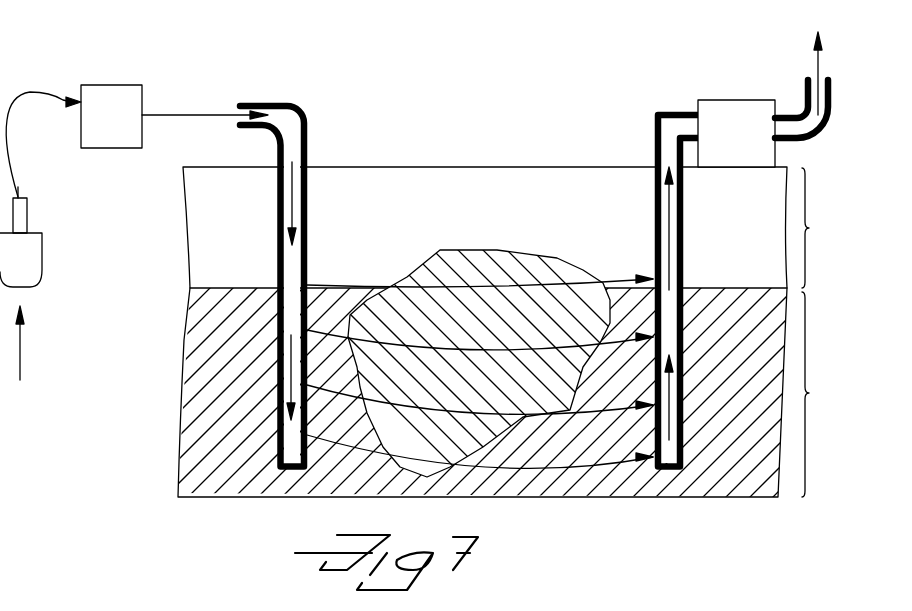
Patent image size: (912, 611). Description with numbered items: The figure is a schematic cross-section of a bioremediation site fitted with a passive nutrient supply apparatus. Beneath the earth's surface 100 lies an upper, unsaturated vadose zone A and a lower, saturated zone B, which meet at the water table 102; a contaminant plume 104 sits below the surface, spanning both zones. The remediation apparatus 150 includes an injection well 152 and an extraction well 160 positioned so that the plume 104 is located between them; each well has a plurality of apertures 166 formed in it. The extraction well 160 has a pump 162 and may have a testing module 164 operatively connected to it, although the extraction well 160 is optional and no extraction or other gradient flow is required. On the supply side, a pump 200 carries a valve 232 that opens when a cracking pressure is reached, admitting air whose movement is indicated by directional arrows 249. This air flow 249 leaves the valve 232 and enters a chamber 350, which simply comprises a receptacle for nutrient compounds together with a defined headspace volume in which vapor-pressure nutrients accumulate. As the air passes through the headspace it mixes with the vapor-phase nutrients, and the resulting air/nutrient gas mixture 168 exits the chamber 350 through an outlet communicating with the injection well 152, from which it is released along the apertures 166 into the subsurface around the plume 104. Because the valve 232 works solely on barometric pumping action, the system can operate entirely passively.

The earth's surface 100 is at (543, 161).
The water table 102 is at (752, 288).
The contaminant plume 104 is at (460, 263).
The remediation apparatus 150 is at (685, 86).
The injection well 152 is at (277, 260).
The extraction well 160 is at (657, 120).
The pump 162 is at (832, 132).
The testing module 164 is at (727, 100).
The apertures 166 is at (657, 212).
The air/nutrient gas mixture 168 is at (200, 113).
The pump 200 is at (62, 218).
The valve 232 is at (42, 261).
The air flow 249 is at (38, 92).
The chamber 350 is at (130, 131).
The unsaturated (vadose) zone A is at (821, 228).
The saturated zone B is at (820, 394).